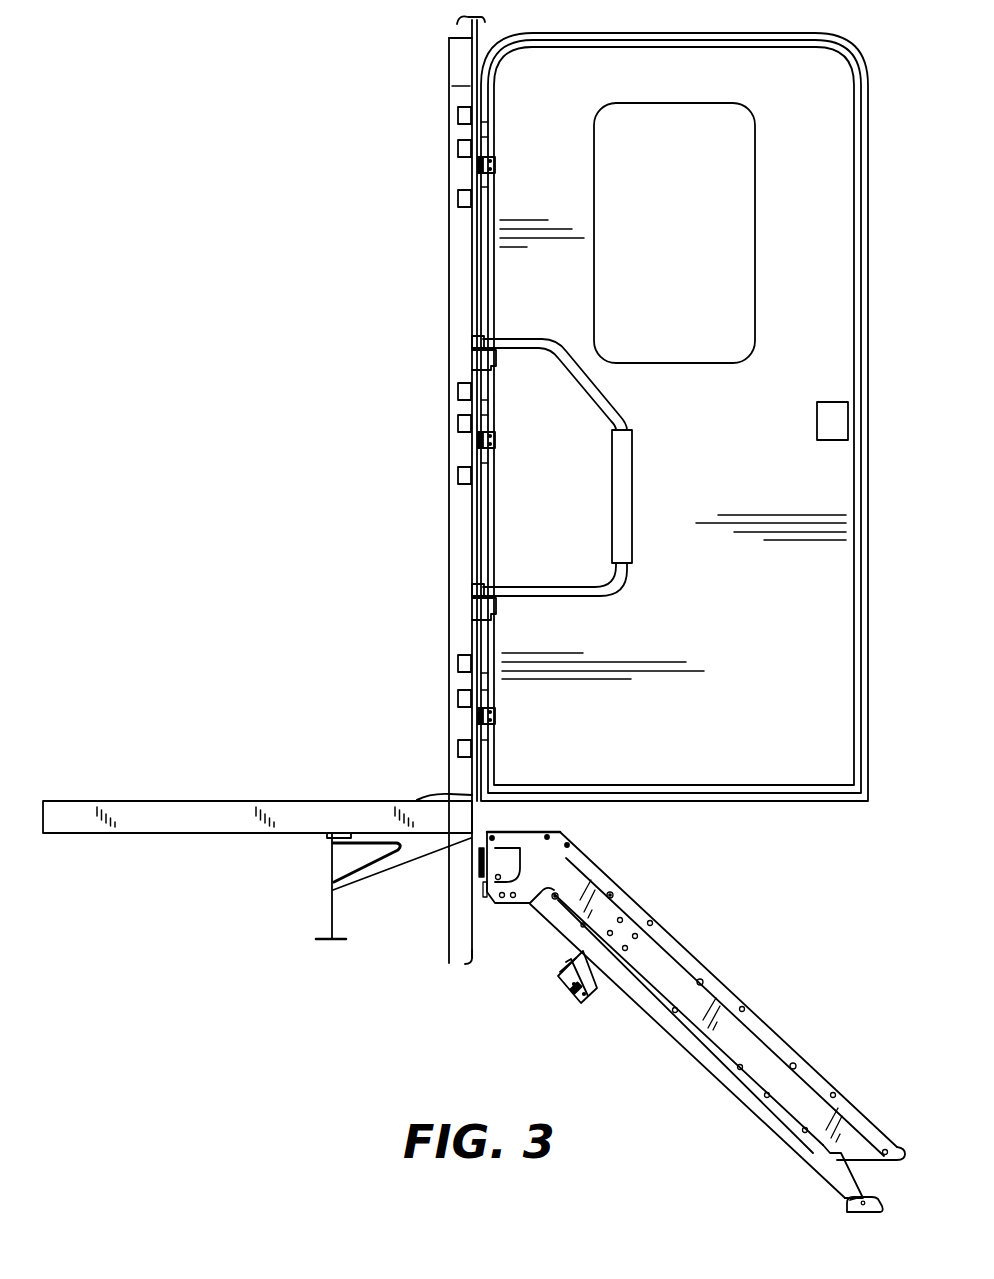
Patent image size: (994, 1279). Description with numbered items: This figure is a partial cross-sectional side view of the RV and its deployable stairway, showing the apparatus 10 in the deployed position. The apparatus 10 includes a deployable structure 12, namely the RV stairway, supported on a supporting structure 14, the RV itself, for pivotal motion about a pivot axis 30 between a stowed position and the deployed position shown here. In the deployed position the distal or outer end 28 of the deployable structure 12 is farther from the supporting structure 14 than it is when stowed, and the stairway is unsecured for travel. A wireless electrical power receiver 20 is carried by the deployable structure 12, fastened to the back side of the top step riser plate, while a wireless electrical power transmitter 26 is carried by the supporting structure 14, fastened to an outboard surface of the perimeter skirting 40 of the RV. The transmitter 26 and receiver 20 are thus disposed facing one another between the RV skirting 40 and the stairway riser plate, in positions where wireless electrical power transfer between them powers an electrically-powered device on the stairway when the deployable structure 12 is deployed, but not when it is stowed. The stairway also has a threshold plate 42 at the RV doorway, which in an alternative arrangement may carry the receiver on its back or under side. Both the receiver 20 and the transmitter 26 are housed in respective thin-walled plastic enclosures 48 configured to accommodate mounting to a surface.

The apparatus 10 is at (258, 1071).
The deployable structure 12 is at (750, 982).
The supporting structure 14 is at (440, 605).
The wireless electrical power receiver 20 is at (588, 864).
The wireless electrical power transmitter 26 is at (472, 866).
The distal or outer end 28 is at (847, 1207).
The pivot axis 30 is at (414, 799).
The perimeter skirting 40 is at (472, 927).
The threshold plate 42 is at (441, 797).
The thin-walled plastic enclosures 48 is at (487, 861).